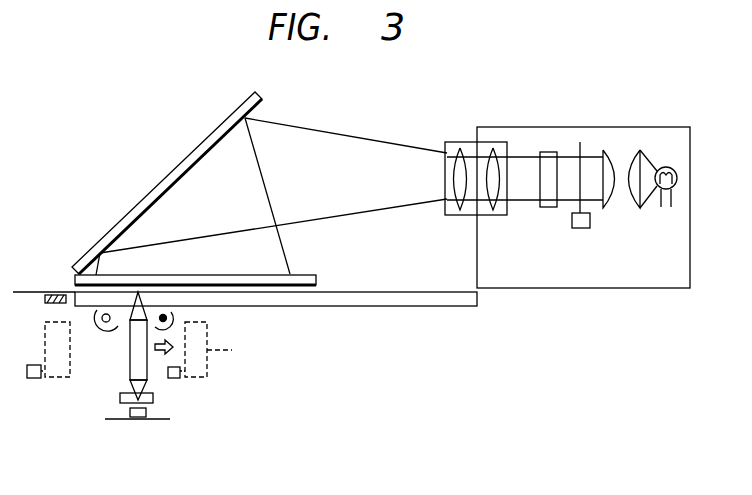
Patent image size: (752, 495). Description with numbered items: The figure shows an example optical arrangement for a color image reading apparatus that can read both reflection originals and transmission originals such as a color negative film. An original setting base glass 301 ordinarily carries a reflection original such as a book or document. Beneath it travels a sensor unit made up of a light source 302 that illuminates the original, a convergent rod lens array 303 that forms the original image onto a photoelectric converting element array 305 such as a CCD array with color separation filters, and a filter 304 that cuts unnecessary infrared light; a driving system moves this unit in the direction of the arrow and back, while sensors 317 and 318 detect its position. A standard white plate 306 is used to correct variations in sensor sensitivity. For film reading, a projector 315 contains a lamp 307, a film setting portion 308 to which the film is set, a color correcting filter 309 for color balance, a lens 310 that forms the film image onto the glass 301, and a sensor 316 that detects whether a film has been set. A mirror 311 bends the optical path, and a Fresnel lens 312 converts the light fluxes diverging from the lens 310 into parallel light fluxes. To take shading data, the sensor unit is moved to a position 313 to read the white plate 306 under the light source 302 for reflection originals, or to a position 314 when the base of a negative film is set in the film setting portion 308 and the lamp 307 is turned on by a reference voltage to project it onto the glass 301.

The original setting base glass 301 is at (370, 306).
The light source 302 is at (100, 327).
The convergent rod lens array 303 is at (147, 370).
The filter 304 is at (153, 403).
The photoelectric converting element array 305 is at (135, 417).
The standard white plate 306 is at (55, 292).
The lamp 307 is at (676, 170).
The film setting portion 308 is at (580, 142).
The color correcting filter 309 is at (548, 152).
The lens 310 is at (446, 142).
The mirror 311 is at (212, 139).
The Fresnel lens 312 is at (310, 280).
The position 313 is at (62, 378).
The position 314 is at (211, 349).
The projector 315 is at (605, 289).
The sensor 316 is at (584, 228).
The sensor 317 is at (33, 378).
The sensor 318 is at (174, 378).